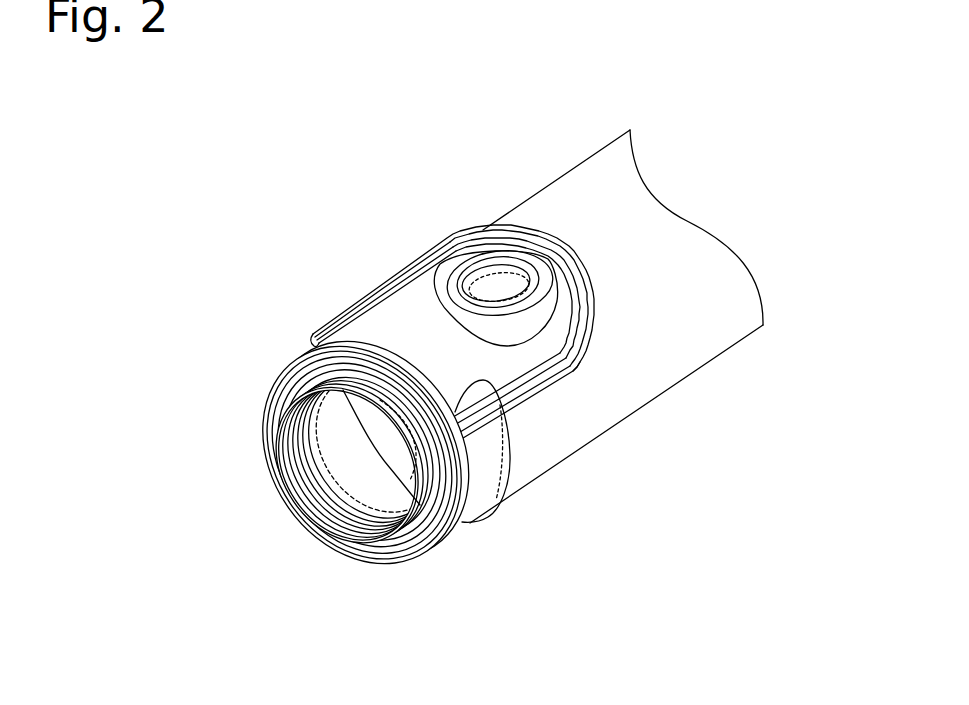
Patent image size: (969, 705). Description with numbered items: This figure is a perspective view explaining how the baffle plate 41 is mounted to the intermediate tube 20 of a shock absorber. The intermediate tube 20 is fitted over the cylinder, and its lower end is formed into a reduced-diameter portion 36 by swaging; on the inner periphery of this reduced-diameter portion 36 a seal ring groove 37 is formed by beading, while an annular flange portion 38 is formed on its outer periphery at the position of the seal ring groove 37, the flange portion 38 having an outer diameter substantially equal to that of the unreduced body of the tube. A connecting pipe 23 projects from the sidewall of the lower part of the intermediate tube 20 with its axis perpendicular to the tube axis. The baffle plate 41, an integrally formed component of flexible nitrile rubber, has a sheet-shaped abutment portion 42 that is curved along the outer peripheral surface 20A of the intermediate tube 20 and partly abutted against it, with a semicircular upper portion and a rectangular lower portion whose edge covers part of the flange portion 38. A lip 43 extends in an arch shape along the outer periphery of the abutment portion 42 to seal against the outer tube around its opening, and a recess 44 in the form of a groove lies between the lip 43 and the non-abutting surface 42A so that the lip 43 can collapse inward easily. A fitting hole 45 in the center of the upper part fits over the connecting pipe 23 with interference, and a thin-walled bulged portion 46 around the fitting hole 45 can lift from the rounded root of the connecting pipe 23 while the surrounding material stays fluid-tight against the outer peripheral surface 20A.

The intermediate tube 20 is at (715, 361).
The outer peripheral surface 20A is at (732, 288).
The connecting pipe 23 is at (487, 266).
The reduced-diameter portion 36 is at (480, 521).
The seal ring groove 37 is at (353, 520).
The flange portion 38 is at (443, 547).
The baffle plate 41 is at (350, 302).
The abutment portion 42 is at (363, 343).
The non-abutting surface 42A is at (387, 327).
The lip 43 is at (417, 270).
The recess 44 is at (518, 402).
The fitting hole 45 is at (540, 295).
The bulged portion 46 is at (545, 328).